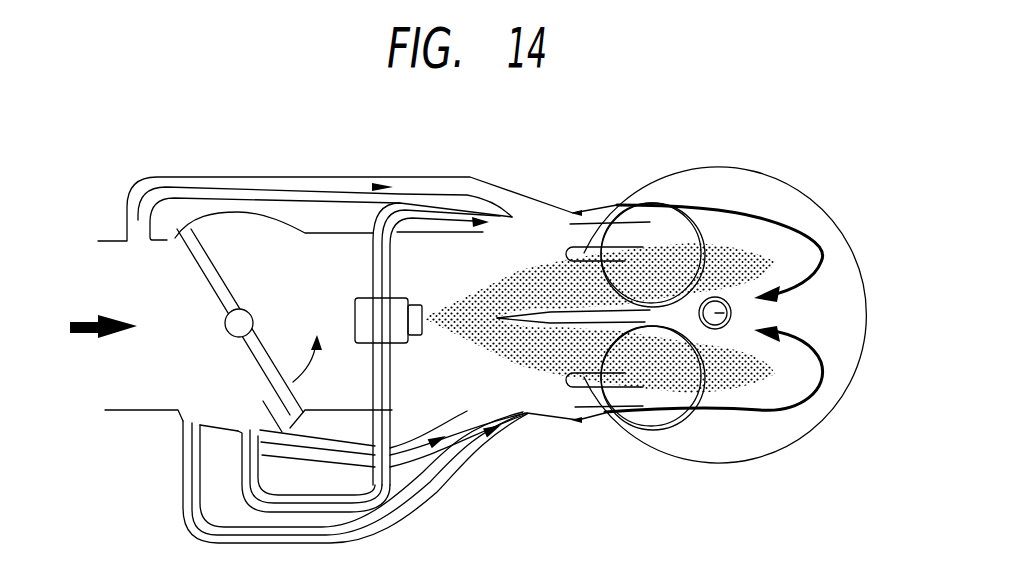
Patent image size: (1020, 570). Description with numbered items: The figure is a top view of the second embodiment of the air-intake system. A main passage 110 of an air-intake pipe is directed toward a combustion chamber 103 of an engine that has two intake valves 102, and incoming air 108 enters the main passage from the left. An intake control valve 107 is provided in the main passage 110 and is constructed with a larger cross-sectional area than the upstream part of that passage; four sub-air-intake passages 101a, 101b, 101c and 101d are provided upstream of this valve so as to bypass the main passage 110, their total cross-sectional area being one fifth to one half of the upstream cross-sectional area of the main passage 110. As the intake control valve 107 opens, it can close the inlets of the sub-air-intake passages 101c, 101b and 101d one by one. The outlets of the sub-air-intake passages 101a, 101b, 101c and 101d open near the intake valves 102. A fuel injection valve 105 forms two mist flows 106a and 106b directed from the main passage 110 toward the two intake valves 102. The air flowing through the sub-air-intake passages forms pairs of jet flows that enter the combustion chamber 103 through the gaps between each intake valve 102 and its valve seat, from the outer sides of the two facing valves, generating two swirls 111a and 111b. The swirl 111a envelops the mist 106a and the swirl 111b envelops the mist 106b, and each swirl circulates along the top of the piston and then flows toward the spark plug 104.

The sub-air-intake passage 101a is at (480, 183).
The sub-air-intake passage 101b is at (495, 216).
The sub-air-intake passage 101c is at (473, 415).
The sub-air-intake passage 101d is at (533, 420).
The intake valve 102 is at (647, 240).
The combustion chamber 103 is at (788, 180).
The spark plug 104 is at (731, 313).
The fuel injection valve 105 is at (403, 345).
The mist flow 106a is at (757, 253).
The mist flow 106b is at (763, 380).
The intake control valve 107 is at (206, 296).
The inlet air flow 108 is at (77, 335).
The main passage 110 is at (342, 233).
The swirl 111a is at (727, 209).
The swirl 111b is at (732, 412).